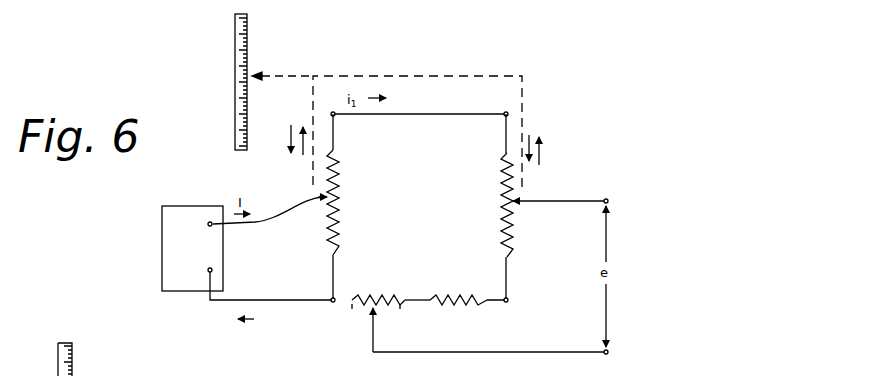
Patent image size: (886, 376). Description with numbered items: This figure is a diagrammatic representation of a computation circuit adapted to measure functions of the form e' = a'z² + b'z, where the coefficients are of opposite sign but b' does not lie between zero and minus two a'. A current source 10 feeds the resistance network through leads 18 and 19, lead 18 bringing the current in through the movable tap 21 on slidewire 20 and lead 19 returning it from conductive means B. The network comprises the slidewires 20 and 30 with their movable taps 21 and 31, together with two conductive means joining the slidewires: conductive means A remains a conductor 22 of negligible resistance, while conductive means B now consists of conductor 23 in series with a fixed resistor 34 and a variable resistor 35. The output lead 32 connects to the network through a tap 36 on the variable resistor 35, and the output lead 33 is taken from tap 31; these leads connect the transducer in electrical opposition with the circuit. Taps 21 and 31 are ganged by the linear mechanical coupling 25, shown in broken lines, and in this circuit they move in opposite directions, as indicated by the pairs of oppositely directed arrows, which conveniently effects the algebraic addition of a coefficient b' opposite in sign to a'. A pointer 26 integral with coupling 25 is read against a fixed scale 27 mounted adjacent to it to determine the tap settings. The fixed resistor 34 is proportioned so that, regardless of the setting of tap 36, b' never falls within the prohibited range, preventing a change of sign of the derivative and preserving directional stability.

The current source 10 is at (160, 252).
The lead 18 is at (267, 220).
The lead 19 is at (268, 302).
The slidewire 20 is at (340, 213).
The movable tap 21 is at (321, 204).
The conductor 22 is at (418, 113).
The conductor 23 is at (492, 304).
The mechanical coupling 25 is at (372, 76).
The pointer 26 is at (266, 76).
The fixed scale 27 is at (235, 76).
The slidewire 30 is at (498, 182).
The movable tap 31 is at (513, 206).
The lead 32 is at (541, 351).
The lead 33 is at (556, 201).
The fixed resistor 34 is at (460, 306).
The variable resistor 35 is at (375, 294).
The tap 36 is at (375, 320).